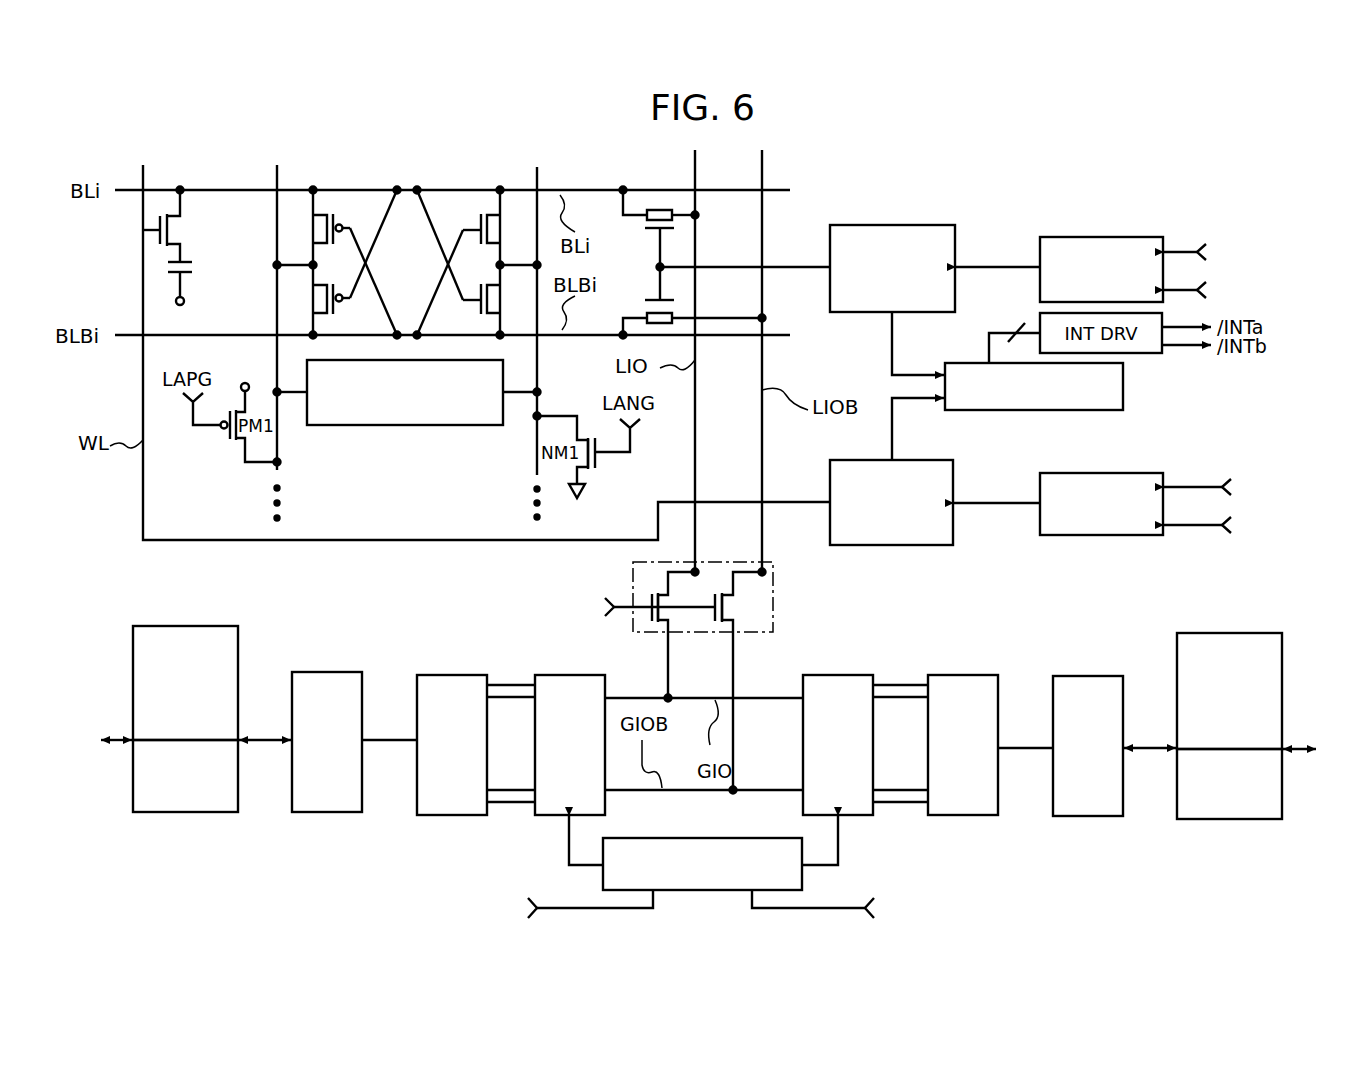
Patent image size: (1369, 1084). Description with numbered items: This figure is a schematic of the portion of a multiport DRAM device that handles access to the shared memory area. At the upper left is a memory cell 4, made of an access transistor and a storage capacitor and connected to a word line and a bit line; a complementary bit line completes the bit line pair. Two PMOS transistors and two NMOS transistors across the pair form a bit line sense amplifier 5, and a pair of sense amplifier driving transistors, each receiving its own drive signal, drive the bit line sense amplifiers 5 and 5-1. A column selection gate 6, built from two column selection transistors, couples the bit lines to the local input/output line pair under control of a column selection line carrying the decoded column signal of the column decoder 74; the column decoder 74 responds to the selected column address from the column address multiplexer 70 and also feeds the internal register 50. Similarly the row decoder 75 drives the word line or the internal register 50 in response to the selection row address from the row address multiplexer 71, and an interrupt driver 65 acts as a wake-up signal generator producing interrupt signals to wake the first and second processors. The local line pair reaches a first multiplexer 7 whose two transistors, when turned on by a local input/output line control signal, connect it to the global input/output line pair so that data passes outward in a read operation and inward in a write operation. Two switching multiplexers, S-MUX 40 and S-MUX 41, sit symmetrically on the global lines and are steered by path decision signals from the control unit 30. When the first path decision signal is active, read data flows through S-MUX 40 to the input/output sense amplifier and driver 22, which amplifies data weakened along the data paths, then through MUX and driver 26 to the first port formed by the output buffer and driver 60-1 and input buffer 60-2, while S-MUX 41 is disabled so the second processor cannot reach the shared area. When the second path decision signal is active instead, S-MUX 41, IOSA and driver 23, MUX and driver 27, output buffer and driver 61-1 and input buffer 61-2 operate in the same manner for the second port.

The memory cell 4 is at (203, 246).
The bit line sense amplifier 5 is at (413, 273).
The bit line sense amplifier 5-1 is at (405, 425).
The column selection gate 6 is at (637, 272).
The first multiplexer 7 is at (773, 598).
The input/output sense amplifier and driver 22 is at (455, 675).
The input/output sense amplifier and driver 23 is at (975, 675).
The MUX and driver 26 is at (326, 672).
The MUX and driver 27 is at (1087, 676).
The control unit 30 is at (665, 838).
The S-MUX 40 is at (585, 675).
The S-MUX 41 is at (835, 675).
The internal register 50 is at (1123, 395).
The output buffer and driver 60-1 is at (163, 626).
The input buffer 60-2 is at (185, 812).
The output buffer and driver 61-1 is at (1207, 633).
The input buffer 61-2 is at (1228, 819).
The interrupt driver 65 is at (1020, 321).
The column address multiplexer 70 is at (1098, 237).
The row address multiplexer 71 is at (1128, 473).
The column decoder 74 is at (895, 225).
The row decoder 75 is at (917, 460).